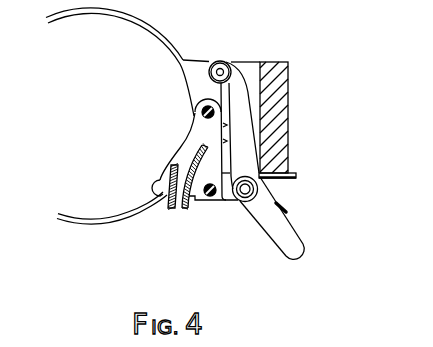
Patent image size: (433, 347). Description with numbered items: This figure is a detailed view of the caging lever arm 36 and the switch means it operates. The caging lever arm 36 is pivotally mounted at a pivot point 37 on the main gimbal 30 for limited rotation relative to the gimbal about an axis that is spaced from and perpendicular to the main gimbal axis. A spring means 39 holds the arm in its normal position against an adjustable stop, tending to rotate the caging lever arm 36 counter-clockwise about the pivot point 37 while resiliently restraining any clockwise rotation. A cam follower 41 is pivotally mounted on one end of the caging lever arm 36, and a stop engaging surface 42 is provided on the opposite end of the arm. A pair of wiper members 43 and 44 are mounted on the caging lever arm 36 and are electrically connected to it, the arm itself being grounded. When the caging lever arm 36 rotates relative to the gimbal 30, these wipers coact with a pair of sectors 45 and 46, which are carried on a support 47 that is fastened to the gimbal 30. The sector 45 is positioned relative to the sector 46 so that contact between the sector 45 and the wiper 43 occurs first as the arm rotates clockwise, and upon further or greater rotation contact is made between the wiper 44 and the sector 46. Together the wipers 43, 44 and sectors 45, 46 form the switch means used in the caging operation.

The main gimbal 30 is at (289, 71).
The caging lever arm 36 is at (257, 223).
The pivot point 37 is at (243, 200).
The spring means 39 is at (290, 174).
The cam follower 41 is at (220, 61).
The stop engaging surface 42 is at (277, 248).
The wiper member 43 is at (227, 142).
The wiper member 44 is at (226, 126).
The sector 45 is at (195, 164).
The sector 46 is at (163, 186).
The support 47 is at (200, 201).